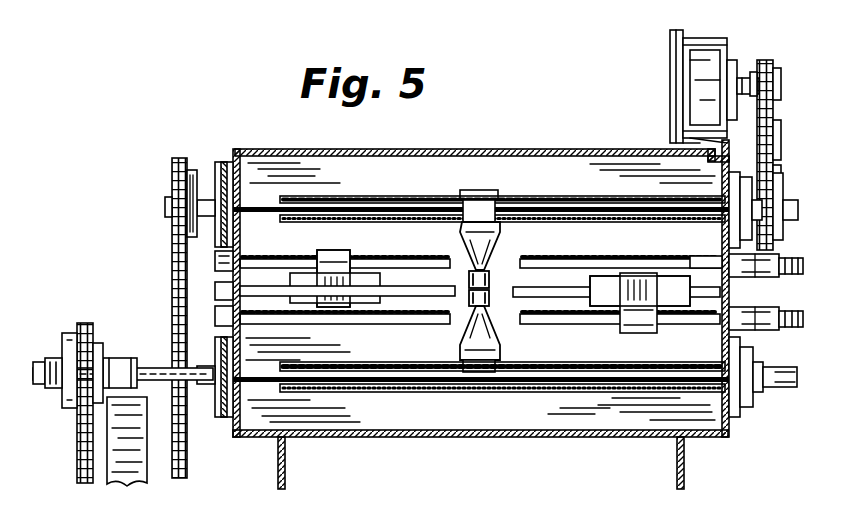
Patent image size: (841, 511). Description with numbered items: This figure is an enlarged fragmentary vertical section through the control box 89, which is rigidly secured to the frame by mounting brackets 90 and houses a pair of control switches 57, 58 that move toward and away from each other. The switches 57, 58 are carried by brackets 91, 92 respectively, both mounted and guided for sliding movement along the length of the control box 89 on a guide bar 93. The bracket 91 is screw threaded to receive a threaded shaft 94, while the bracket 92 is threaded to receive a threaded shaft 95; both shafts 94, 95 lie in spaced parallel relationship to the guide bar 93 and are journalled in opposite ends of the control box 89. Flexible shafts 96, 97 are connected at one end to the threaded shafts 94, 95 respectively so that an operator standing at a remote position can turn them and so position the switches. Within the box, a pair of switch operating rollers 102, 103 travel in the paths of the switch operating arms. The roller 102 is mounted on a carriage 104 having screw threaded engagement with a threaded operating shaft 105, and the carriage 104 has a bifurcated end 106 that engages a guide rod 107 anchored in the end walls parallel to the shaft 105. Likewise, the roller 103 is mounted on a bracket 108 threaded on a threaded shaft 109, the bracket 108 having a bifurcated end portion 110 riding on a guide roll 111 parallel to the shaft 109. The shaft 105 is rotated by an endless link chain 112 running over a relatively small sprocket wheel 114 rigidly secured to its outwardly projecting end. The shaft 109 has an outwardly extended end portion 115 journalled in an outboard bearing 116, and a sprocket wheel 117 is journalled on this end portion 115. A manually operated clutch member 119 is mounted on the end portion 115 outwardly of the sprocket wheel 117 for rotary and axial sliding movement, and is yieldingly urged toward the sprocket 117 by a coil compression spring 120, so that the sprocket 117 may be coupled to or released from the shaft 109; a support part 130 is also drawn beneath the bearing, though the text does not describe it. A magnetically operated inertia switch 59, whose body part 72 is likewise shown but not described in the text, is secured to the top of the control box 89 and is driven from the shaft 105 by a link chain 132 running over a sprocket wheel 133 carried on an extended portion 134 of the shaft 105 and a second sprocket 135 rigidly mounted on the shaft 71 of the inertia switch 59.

The control switch 57 is at (612, 283).
The control switch 58 is at (358, 265).
The magnetically operated inertia switch 59 is at (660, 58).
The shaft 71 is at (748, 78).
The motor housing 72 is at (688, 88).
The control box 89 is at (492, 148).
The mounting brackets 90 is at (285, 472).
The bracket 91 is at (598, 325).
The bracket 92 is at (320, 326).
The guide bar 93 is at (424, 325).
The threaded shaft 94 is at (383, 325).
The threaded shaft 95 is at (420, 256).
The flexible shaft 96 is at (797, 309).
The flexible shaft 97 is at (797, 257).
The switch operating roller 102 is at (489, 276).
The switch operating roller 103 is at (490, 310).
The carriage 104 is at (503, 222).
The threaded operating shaft 105 is at (335, 183).
The bifurcated end 106 is at (497, 190).
The guide rod 107 is at (400, 183).
The bracket 108 is at (438, 372).
The threaded shaft 109 is at (371, 385).
The bifurcated end portion 110 is at (481, 378).
The guide roll 111 is at (565, 386).
The endless link chain 112 is at (176, 284).
The sprocket wheel 114 is at (175, 228).
The outwardly extended end portion 115 is at (157, 368).
The outboard bearing 116 is at (122, 358).
The sprocket wheel 117 is at (89, 323).
The clutch member 119 is at (62, 398).
The coil compression spring 120 is at (52, 358).
The bracket 130 is at (79, 470).
The link chain 132 is at (773, 132).
The sprocket wheel 133 is at (776, 185).
The extended portion 134 is at (792, 200).
The second sprocket 135 is at (772, 82).